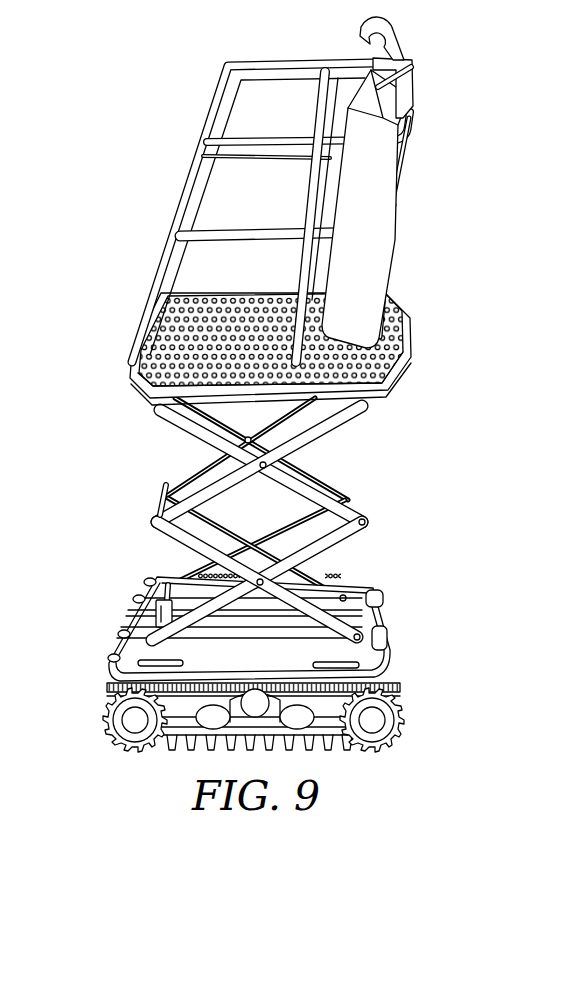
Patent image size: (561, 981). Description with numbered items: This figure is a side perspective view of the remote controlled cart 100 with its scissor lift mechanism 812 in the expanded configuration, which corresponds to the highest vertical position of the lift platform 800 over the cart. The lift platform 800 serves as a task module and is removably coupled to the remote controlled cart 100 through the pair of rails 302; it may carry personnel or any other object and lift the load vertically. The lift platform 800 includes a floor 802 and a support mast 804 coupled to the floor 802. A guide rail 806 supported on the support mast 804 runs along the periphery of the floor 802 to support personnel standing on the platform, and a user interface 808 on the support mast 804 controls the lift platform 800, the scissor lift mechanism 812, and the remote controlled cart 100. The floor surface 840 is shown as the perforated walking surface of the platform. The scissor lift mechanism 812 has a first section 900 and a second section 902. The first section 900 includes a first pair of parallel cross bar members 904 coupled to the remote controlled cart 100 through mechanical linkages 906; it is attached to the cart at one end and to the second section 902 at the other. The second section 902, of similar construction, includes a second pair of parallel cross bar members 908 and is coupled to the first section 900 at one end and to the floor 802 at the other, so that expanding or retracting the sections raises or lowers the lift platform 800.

The remote controlled cart 100 is at (292, 654).
The pair of rails 302 is at (156, 581).
The lift platform 800 is at (307, 211).
The floor 802 is at (405, 332).
The support mast 804 is at (390, 258).
The guide rail 806 is at (165, 214).
The user interface 808 is at (410, 44).
The scissor lift mechanism 812 is at (342, 498).
The perforated floor surface 840 is at (165, 317).
The first section 900 is at (348, 562).
The second section 902 is at (338, 458).
The first pair of parallel cross bar members 904 is at (347, 592).
The mechanical linkages 906 is at (360, 613).
The second pair of parallel cross bar members 908 is at (187, 481).